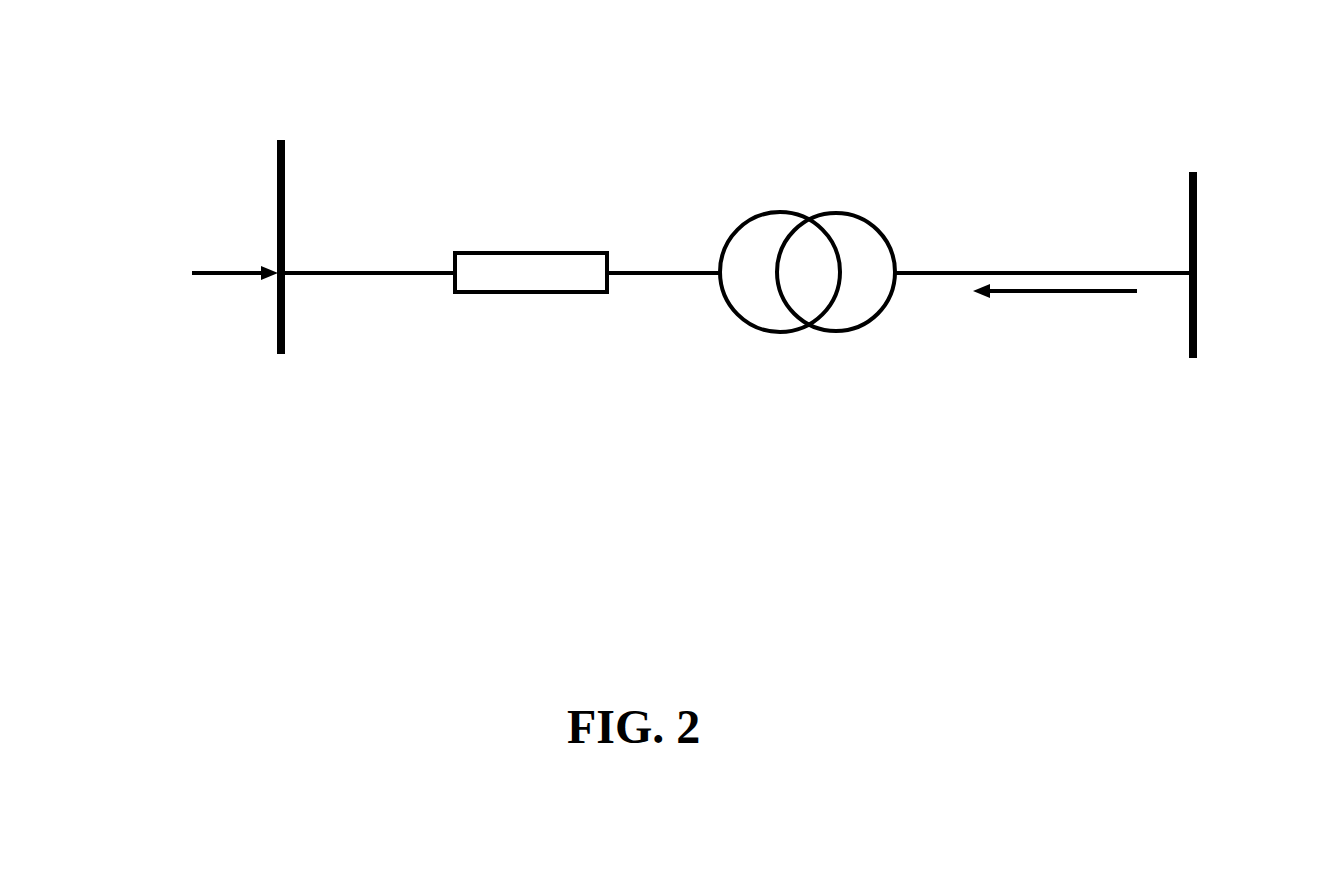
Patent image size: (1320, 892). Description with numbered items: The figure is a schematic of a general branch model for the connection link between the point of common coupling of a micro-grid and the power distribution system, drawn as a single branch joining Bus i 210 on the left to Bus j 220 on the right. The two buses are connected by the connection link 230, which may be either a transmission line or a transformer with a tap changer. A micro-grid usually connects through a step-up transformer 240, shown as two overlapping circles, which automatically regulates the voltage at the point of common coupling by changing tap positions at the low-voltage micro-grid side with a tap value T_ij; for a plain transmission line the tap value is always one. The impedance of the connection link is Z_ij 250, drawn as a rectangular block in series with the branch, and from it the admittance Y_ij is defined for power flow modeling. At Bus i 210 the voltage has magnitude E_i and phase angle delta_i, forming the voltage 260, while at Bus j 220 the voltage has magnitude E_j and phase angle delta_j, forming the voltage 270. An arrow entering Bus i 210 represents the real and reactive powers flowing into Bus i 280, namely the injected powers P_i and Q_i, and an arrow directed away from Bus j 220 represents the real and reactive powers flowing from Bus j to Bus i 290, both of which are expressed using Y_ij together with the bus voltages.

The Bus i 210 is at (282, 90).
The Bus j 220 is at (1177, 102).
The connection link 230 is at (673, 273).
The step-up transformer 240 is at (815, 143).
The impedance of the connection link 250 is at (537, 188).
The voltage at Bus i 260 is at (310, 413).
The voltage at Bus j 270 is at (1182, 413).
The real and reactive powers flowing into bus i 280 is at (195, 343).
The real and reactive powers flowing from Bus j to Bus i 290 is at (1052, 360).